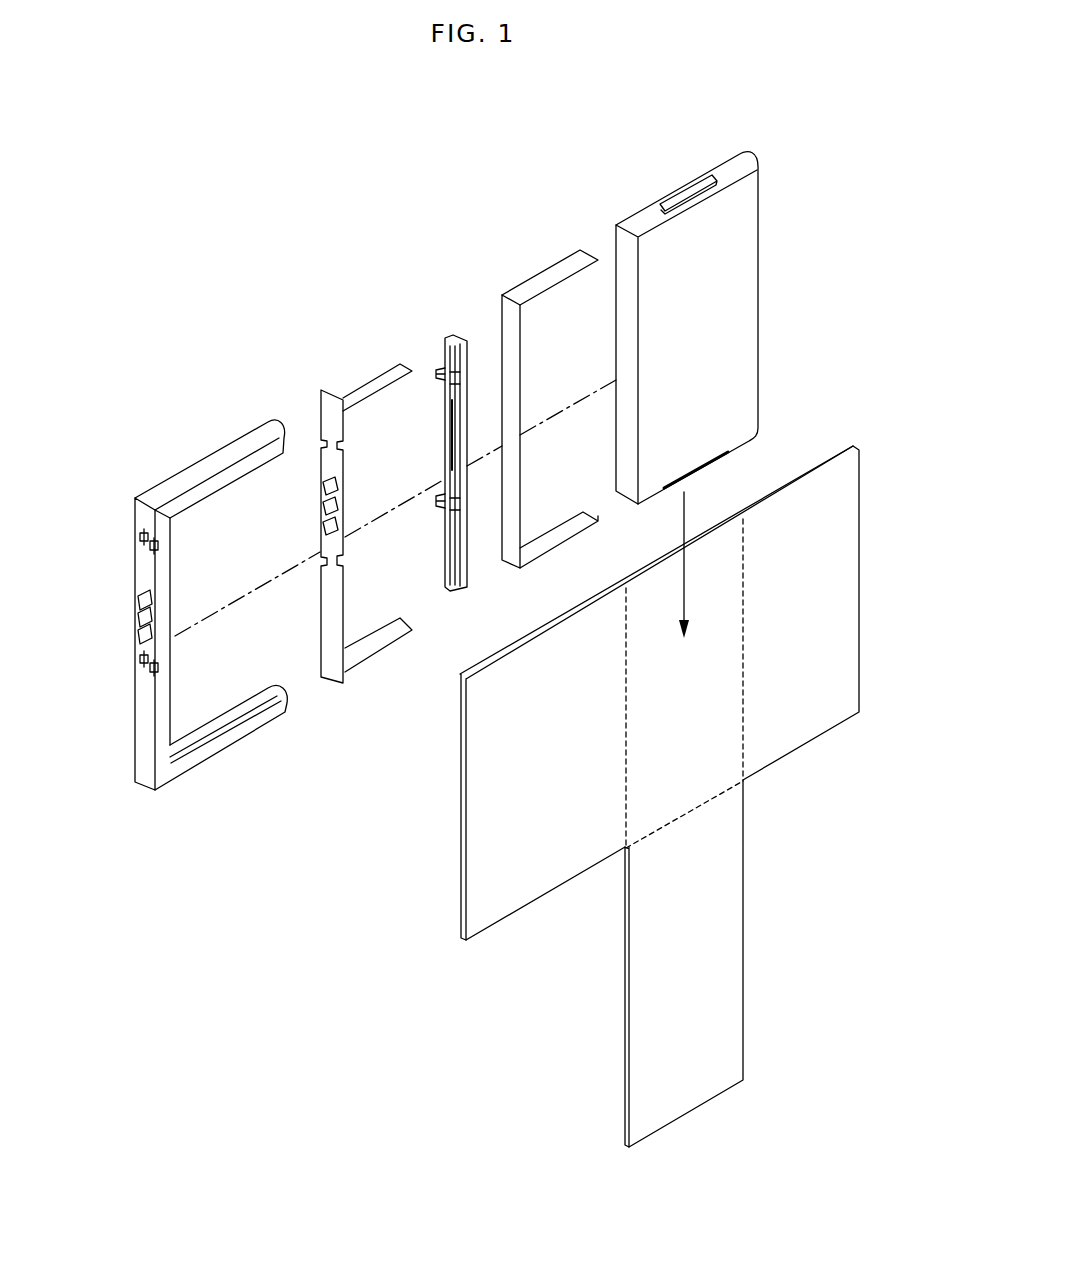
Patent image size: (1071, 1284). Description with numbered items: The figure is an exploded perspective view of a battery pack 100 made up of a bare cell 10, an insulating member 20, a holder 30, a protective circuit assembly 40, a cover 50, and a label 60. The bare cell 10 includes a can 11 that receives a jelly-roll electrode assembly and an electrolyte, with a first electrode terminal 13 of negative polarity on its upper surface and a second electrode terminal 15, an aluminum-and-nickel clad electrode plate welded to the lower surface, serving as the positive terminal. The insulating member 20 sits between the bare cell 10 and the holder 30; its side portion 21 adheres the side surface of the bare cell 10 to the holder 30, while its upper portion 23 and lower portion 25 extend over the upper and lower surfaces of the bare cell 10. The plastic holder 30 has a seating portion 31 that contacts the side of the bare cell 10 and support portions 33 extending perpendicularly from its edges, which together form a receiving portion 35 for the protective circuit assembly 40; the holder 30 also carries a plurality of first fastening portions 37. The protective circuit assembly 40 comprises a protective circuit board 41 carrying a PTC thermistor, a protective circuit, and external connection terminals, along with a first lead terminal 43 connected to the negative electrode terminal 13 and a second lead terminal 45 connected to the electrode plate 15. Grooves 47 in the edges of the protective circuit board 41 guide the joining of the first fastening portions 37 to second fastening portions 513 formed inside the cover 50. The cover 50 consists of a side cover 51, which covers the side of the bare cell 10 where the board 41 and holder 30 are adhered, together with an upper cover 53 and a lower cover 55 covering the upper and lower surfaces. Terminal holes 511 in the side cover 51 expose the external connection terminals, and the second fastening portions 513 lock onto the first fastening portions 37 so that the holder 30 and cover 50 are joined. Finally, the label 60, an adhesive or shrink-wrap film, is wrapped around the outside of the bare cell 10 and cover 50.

The battery pack 100 is at (151, 1073).
The bare cell 10 is at (709, 154).
The can 11 is at (752, 292).
The first electrode terminal 13 is at (672, 197).
The second electrode terminal 15 is at (722, 462).
The insulating member 20 is at (547, 254).
The side portion 21 is at (515, 353).
The upper portion 23 is at (570, 274).
The lower portion 25 is at (553, 533).
The holder 30 is at (458, 328).
The seating portion 31 is at (452, 340).
The support portions 33 is at (455, 407).
The receiving portion 35 is at (440, 445).
The first fastening portions 37 is at (448, 511).
The protective circuit assembly 40 is at (386, 346).
The protective circuit board 41 is at (326, 597).
The first lead terminal 43 is at (372, 393).
The second lead terminal 45 is at (387, 634).
The grooves 47 is at (318, 443).
The cover 50 is at (244, 398).
The side cover 51 is at (150, 741).
The upper cover 53 is at (228, 458).
The lower cover 55 is at (232, 757).
The terminal holes 511 is at (143, 637).
The second fastening portions 513 is at (138, 541).
The label 60 is at (468, 835).